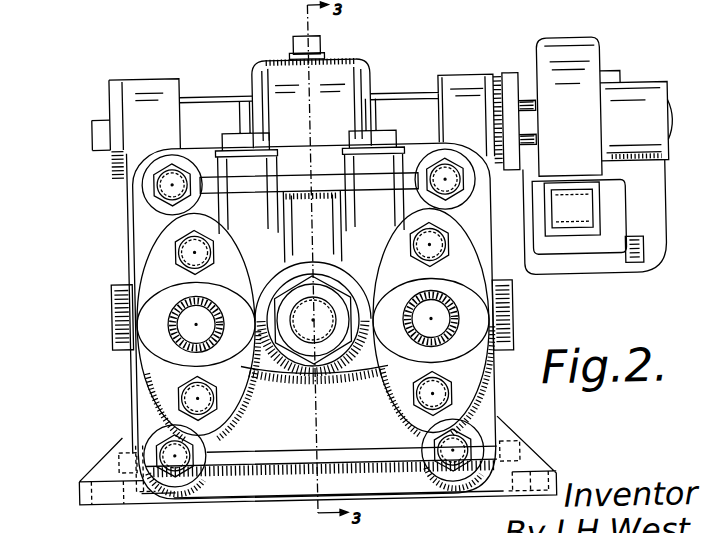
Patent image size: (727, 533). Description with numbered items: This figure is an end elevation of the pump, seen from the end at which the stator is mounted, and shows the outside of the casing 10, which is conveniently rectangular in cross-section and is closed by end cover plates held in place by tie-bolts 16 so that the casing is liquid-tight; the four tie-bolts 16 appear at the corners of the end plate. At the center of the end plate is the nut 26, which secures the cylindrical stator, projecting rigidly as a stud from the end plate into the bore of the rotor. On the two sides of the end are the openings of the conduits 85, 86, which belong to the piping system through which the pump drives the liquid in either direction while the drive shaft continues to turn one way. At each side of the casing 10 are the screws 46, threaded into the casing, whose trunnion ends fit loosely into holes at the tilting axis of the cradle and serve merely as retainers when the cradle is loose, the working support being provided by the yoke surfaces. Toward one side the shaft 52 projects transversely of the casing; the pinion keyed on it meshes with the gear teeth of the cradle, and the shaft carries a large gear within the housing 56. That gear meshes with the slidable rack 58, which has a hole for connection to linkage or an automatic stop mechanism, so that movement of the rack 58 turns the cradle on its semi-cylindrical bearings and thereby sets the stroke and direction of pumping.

The casing 10 is at (135, 231).
The tie-bolts 16 is at (176, 180).
The nut 26 is at (298, 360).
The screws 46 is at (116, 316).
The shaft 52 is at (673, 130).
The housing 56 is at (602, 59).
The slidable rack 58 is at (602, 211).
The conduit 85 is at (186, 336).
The conduit 86 is at (440, 320).